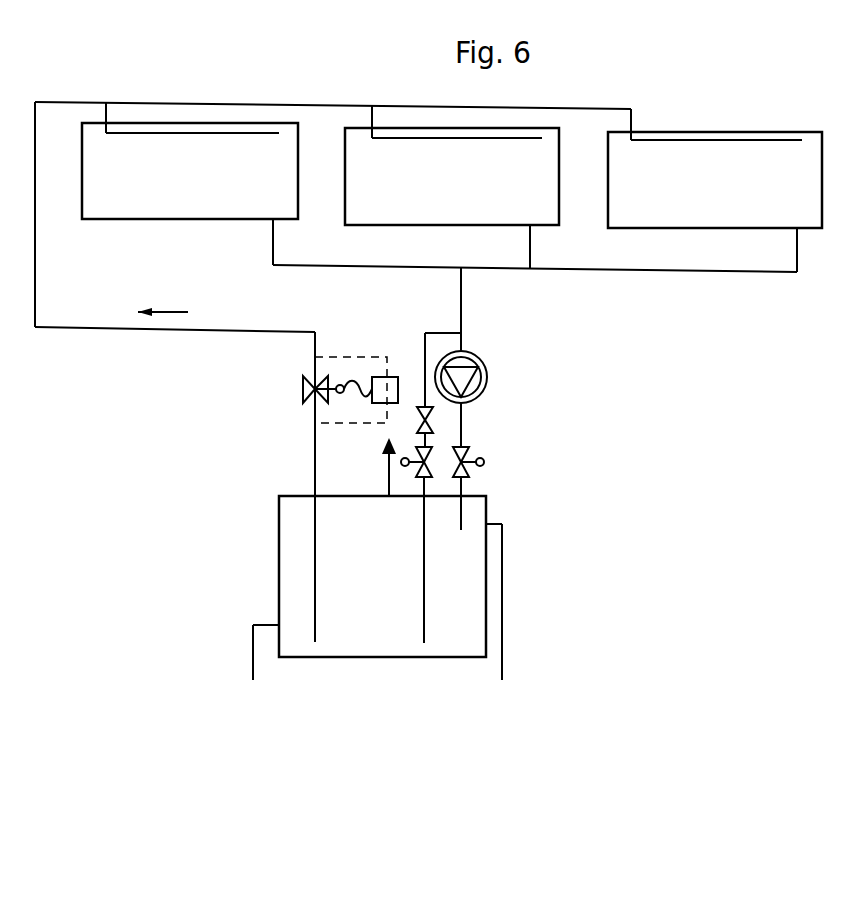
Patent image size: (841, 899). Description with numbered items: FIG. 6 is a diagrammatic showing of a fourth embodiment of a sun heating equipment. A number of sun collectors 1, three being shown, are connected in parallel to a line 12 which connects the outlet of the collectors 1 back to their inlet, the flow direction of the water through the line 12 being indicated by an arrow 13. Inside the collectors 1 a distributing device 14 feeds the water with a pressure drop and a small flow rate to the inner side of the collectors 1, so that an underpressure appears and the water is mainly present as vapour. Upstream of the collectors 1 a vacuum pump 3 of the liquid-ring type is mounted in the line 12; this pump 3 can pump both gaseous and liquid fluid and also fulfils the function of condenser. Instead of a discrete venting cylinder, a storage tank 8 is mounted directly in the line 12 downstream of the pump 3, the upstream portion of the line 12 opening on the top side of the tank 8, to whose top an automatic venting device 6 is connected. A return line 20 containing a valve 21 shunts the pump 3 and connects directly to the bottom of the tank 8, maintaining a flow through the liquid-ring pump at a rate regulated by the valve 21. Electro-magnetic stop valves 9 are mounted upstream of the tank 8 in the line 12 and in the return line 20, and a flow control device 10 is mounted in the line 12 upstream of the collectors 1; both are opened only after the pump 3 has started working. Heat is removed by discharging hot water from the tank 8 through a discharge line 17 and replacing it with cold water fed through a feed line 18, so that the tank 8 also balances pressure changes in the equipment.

The sun collector 1 is at (183, 212).
The vacuum pump 3 is at (487, 377).
The automatic venting device 6 is at (388, 467).
The storage tank 8 is at (279, 554).
The electro-magnetic stop valve 9 is at (430, 455).
The flow control device 10 is at (338, 390).
The line 12 is at (88, 329).
The arrow 13 is at (163, 300).
The distributing device 14 is at (198, 133).
The discharge line 17 is at (503, 565).
The feed line 18 is at (253, 647).
The return line 20 is at (423, 340).
The valve 21 is at (431, 424).